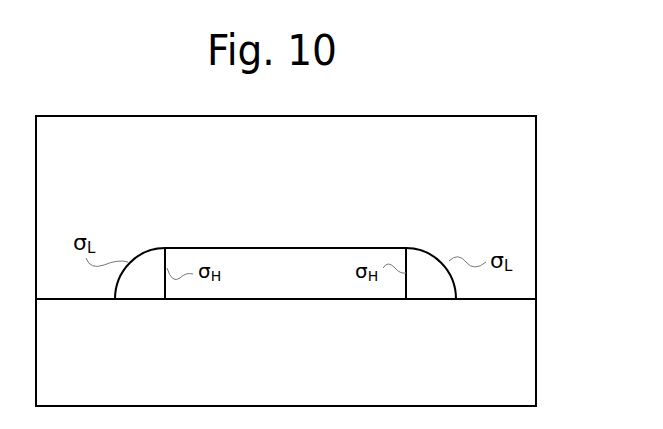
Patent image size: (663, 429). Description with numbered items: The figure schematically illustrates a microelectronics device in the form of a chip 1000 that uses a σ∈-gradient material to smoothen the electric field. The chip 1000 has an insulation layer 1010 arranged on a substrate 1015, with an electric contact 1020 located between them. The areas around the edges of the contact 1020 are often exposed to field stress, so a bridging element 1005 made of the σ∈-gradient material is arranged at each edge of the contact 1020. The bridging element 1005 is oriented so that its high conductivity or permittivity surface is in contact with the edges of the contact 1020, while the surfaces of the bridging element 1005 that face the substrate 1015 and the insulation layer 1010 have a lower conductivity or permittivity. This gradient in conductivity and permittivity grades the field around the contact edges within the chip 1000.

The chip 1000 is at (629, 403).
The bridging element 1005 is at (143, 305).
The insulation layer 1010 is at (286, 236).
The substrate 1015 is at (286, 371).
The electric contact 1020 is at (285, 273).